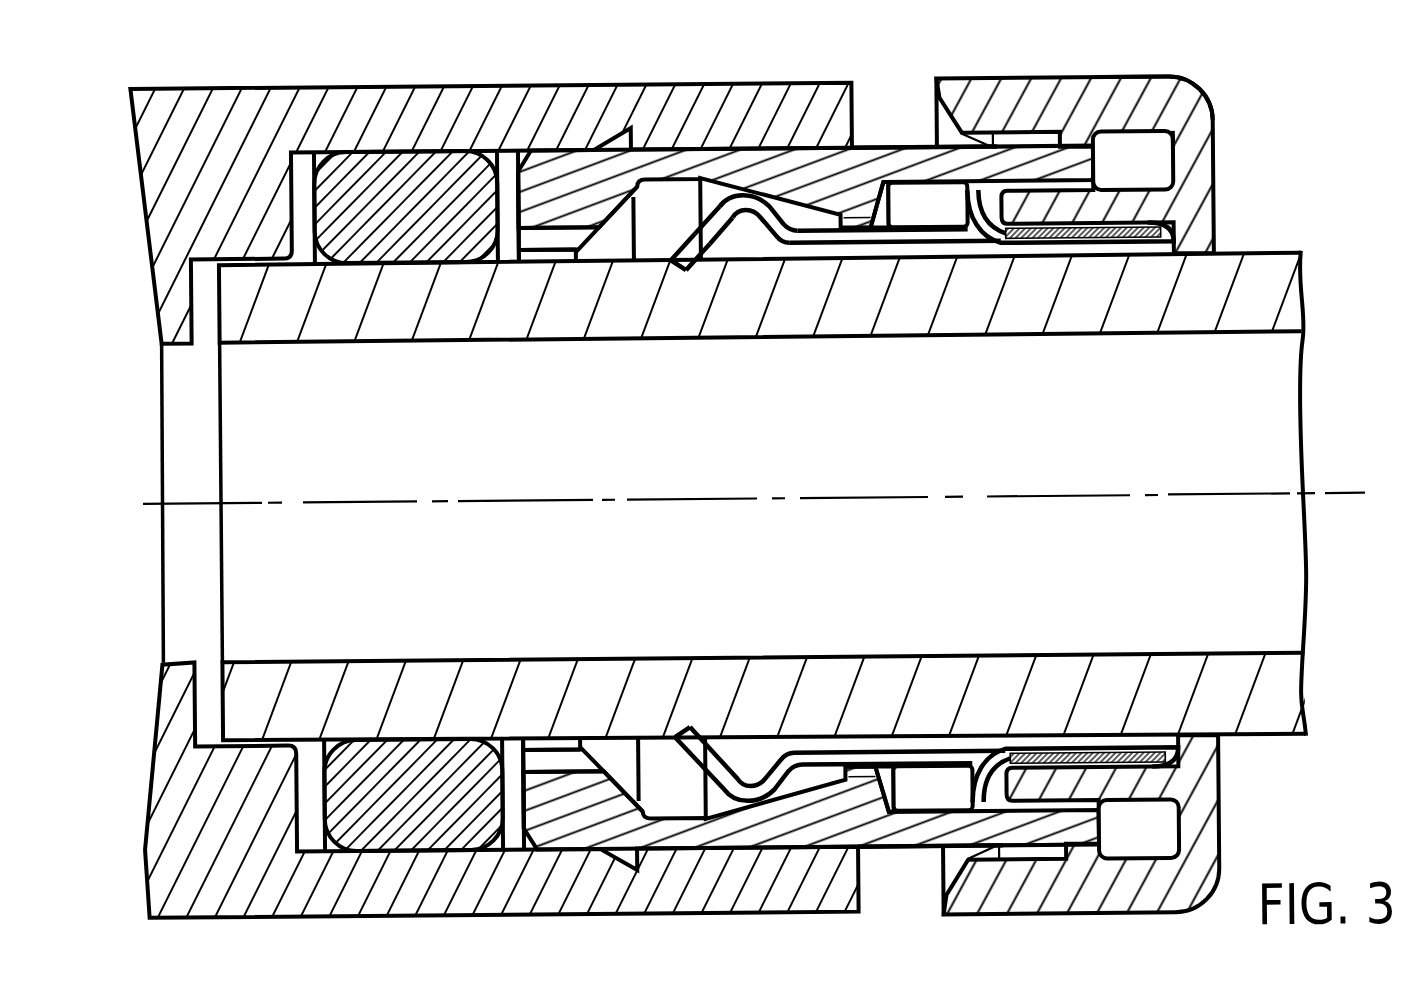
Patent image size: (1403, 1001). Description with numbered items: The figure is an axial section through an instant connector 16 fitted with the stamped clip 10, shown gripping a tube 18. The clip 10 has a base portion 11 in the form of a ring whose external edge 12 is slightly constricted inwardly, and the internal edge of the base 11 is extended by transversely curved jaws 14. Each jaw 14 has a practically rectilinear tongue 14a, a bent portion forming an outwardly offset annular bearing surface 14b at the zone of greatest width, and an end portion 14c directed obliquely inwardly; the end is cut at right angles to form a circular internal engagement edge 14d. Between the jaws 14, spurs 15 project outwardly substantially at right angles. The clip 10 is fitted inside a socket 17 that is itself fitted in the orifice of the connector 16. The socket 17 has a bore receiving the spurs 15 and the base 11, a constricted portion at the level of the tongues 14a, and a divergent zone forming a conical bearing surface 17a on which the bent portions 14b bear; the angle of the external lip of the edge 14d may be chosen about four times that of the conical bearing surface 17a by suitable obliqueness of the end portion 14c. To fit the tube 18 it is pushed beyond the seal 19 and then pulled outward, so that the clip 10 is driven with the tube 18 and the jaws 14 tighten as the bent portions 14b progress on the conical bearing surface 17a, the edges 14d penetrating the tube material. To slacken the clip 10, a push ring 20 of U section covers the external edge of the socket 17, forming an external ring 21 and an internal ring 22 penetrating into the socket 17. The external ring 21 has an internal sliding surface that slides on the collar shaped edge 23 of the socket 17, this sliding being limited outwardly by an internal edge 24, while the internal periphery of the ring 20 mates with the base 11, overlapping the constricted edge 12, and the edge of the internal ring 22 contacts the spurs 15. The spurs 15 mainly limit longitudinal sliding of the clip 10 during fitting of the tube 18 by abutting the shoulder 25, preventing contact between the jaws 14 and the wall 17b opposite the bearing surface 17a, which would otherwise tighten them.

The clip 10 is at (1007, 752).
The base portion 11 is at (1077, 328).
The external edge 12 is at (1177, 240).
The jaws 14 is at (819, 752).
The tongue 14a is at (869, 250).
The annular bearing surface 14b is at (754, 212).
The end portion 14c is at (700, 244).
The internal engagement edge 14d is at (689, 262).
The spurs 15 is at (919, 158).
The connector 16 is at (166, 302).
The socket 17 is at (858, 164).
The conical bearing surface 17a is at (677, 261).
The wall 17b is at (604, 212).
The tube 18 is at (1298, 625).
The seal 19 is at (383, 342).
The push ring 20 is at (1203, 191).
The external ring 21 is at (1135, 79).
The internal ring 22 is at (1116, 195).
The collar shaped edge 23 is at (1178, 150).
The internal edge 24 is at (942, 124).
The shoulder 25 is at (892, 197).